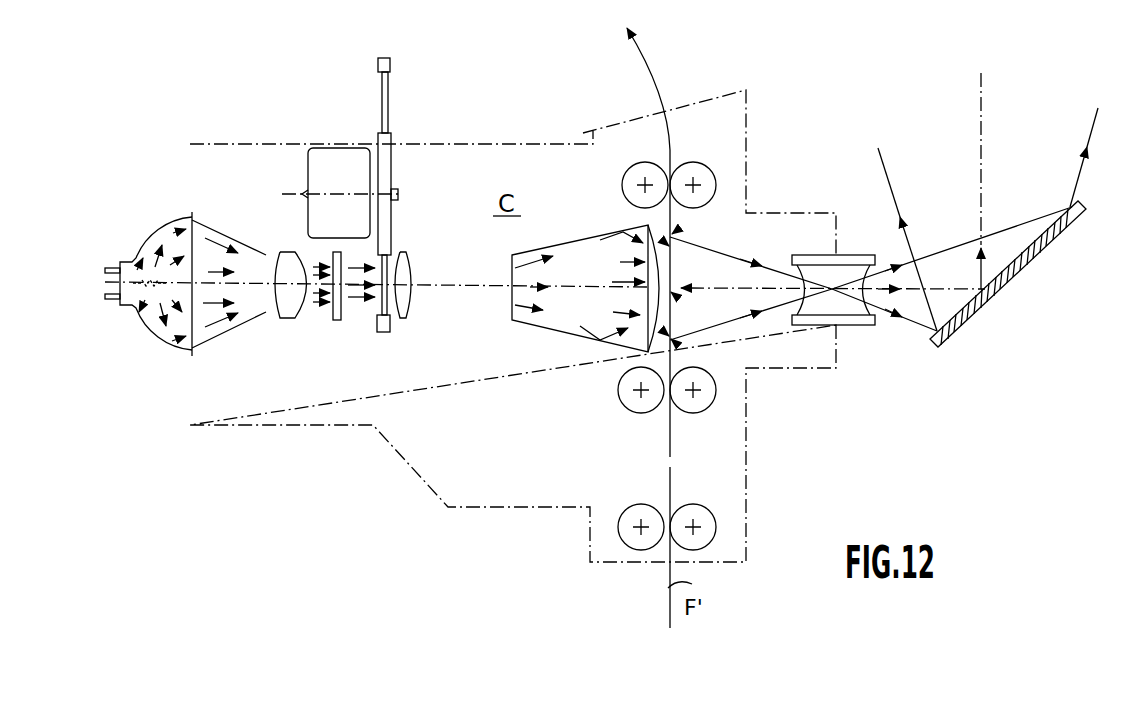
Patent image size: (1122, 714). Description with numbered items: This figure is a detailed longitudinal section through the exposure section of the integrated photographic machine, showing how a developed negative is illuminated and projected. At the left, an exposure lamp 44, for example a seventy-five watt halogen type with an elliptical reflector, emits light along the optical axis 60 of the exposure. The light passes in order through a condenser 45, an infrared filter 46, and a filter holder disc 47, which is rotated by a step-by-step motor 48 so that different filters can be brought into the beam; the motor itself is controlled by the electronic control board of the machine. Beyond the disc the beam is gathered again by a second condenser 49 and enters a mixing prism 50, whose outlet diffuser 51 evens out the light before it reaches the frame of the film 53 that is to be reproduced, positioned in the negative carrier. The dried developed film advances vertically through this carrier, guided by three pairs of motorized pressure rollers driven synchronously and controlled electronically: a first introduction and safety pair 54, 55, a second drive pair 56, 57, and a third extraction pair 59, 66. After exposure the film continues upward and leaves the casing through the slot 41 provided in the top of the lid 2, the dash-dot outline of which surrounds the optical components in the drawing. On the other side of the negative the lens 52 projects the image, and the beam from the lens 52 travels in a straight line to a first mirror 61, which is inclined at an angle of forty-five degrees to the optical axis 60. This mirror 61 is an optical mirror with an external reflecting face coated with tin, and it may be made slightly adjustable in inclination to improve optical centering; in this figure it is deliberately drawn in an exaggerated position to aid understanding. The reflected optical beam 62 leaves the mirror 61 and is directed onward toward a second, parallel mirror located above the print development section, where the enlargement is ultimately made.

The lid 2 is at (516, 144).
The slot 41 is at (638, 75).
The exposure lamp 44 is at (162, 245).
The condenser 45 is at (291, 318).
The infrared filter 46 is at (337, 322).
The filter holder disc 47 is at (390, 67).
The step-by-step motor 48 is at (332, 165).
The second condenser 49 is at (405, 272).
The mixing prism 50 is at (590, 218).
The outlet diffuser 51 is at (640, 280).
The lens 52 is at (843, 266).
The frame of the film 53 is at (673, 262).
The introduction and safety pressure roller 54 is at (620, 532).
The introduction and safety pressure roller 55 is at (705, 537).
The drive pressure roller 56 is at (622, 393).
The drive pressure roller 57 is at (707, 398).
The extraction pressure roller 59 is at (712, 140).
The optical axis 60 is at (722, 295).
The first mirror 61 is at (975, 322).
The optical beam 62 is at (889, 170).
The extraction pressure roller 66 is at (634, 178).